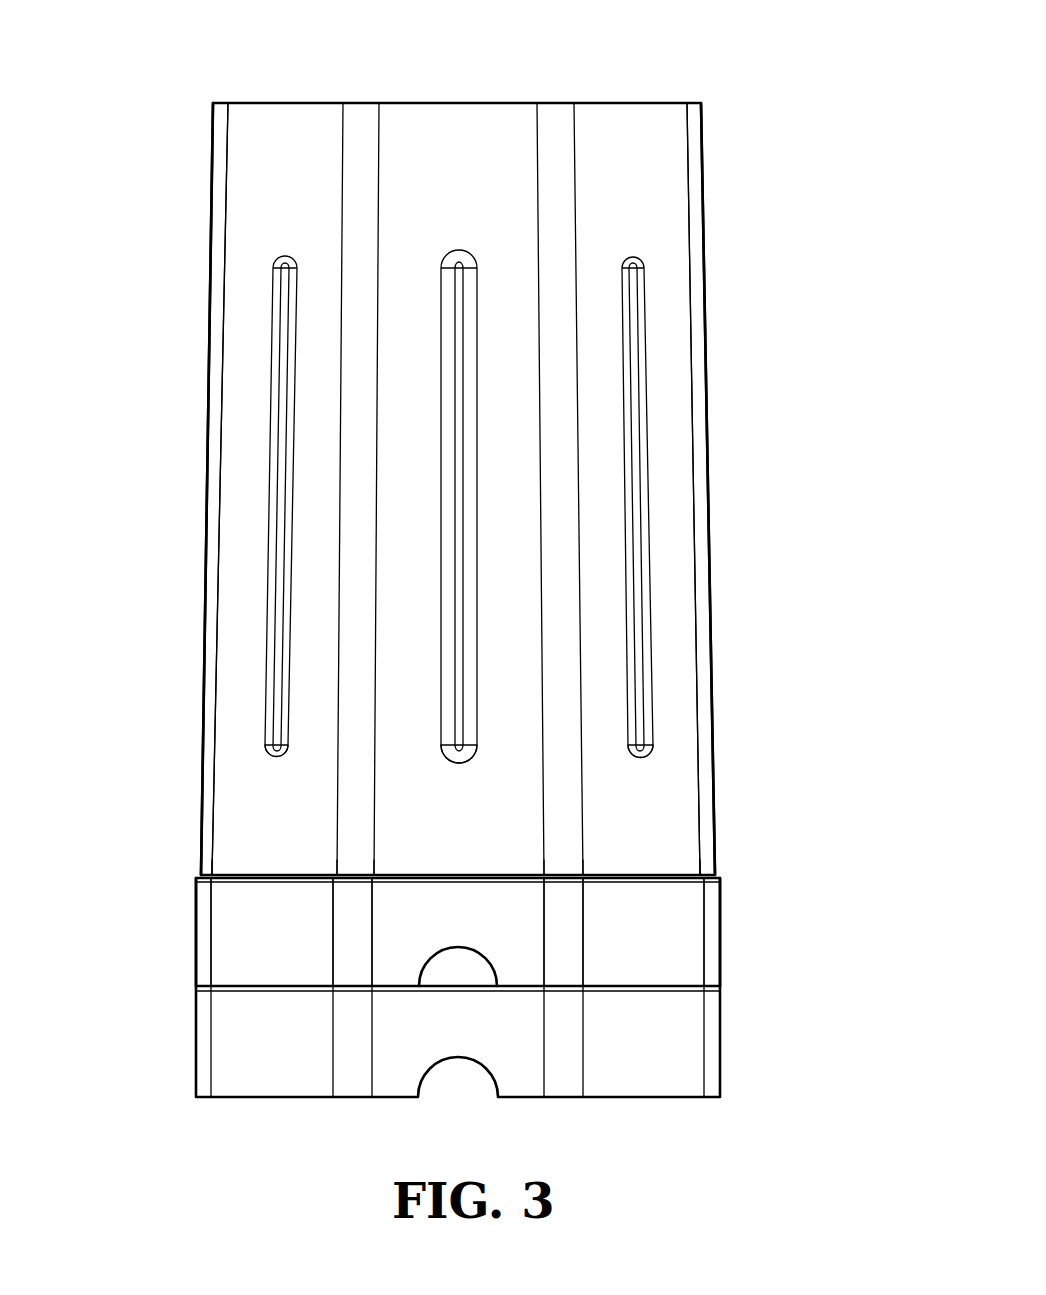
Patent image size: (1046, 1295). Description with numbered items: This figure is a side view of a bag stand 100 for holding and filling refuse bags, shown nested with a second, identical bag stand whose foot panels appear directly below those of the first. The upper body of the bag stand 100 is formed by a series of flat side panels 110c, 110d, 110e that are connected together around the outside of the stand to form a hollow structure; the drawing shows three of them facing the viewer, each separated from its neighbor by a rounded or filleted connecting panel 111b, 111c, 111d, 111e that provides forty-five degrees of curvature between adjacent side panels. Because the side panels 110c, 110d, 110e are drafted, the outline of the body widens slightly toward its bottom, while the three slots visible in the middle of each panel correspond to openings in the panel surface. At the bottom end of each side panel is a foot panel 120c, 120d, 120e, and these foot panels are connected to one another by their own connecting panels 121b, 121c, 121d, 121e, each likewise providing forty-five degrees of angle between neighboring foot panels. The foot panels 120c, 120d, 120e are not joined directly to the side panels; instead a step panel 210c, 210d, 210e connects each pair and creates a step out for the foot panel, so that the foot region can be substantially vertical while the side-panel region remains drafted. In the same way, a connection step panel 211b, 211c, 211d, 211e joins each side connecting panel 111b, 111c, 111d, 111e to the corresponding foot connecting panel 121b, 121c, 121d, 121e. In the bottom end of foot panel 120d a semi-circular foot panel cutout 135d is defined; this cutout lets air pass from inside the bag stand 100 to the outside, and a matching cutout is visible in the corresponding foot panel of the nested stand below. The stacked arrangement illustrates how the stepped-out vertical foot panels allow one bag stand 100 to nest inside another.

The bag stand 100 is at (213, 187).
The side panel 110c is at (283, 127).
The side panel 110d is at (495, 136).
The side panel 110e is at (618, 135).
The connecting panel 111b is at (213, 118).
The connecting panel 111c is at (358, 124).
The connecting panel 111d is at (552, 130).
The connecting panel 111e is at (695, 125).
The foot panel 120c is at (250, 920).
The foot panel 120d is at (393, 958).
The foot panel 120e is at (668, 937).
The connecting panel 121b is at (205, 917).
The connecting panel 121c is at (350, 926).
The connecting panel 121d is at (555, 902).
The connecting panel 121e is at (708, 905).
The foot panel cutout 135d is at (445, 952).
The step panel 210c is at (248, 874).
The step panel 210d is at (402, 876).
The step panel 210e is at (632, 875).
The connection step panel 211b is at (203, 876).
The connection step panel 211c is at (350, 876).
The connection step panel 211d is at (573, 876).
The connection step panel 211e is at (715, 873).